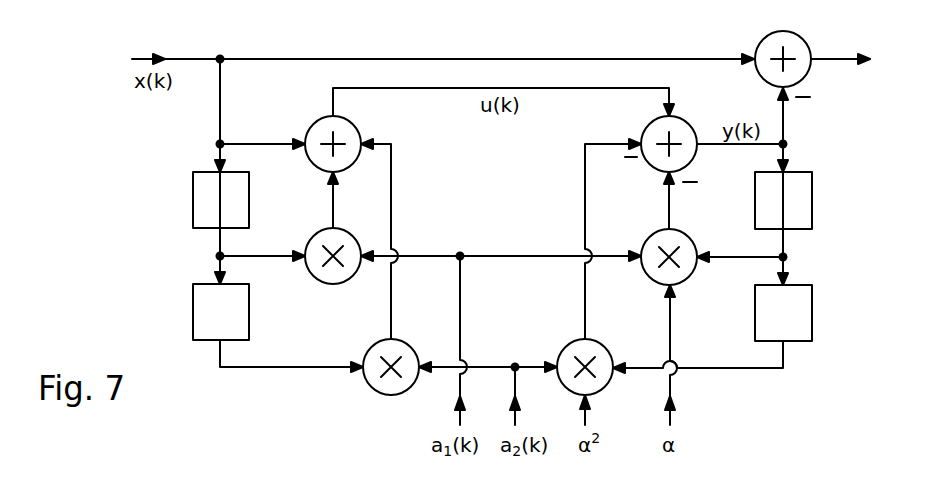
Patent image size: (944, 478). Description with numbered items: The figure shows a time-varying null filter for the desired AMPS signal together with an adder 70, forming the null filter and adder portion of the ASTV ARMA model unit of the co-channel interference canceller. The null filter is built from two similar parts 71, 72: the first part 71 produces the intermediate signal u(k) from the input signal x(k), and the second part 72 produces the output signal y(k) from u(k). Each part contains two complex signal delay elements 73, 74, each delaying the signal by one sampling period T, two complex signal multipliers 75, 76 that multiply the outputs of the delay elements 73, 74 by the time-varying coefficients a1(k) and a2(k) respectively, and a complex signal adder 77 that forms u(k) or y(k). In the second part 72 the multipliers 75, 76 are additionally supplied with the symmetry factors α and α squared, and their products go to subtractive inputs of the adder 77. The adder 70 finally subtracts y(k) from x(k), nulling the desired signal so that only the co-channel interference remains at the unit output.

The adder 70 is at (768, 44).
The first part of the null filter 71 is at (292, 116).
The second part of the null filter 72 is at (729, 104).
The complex signal delay element 73 is at (199, 199).
The complex signal delay element 74 is at (199, 312).
The complex signal multiplier 75 is at (310, 270).
The complex signal multiplier 76 is at (368, 383).
The complex signal adder 77 is at (313, 162).